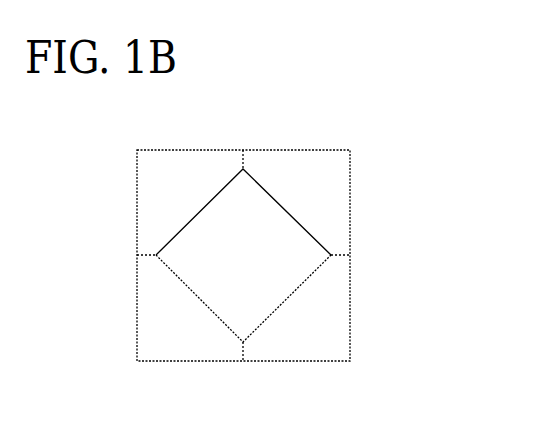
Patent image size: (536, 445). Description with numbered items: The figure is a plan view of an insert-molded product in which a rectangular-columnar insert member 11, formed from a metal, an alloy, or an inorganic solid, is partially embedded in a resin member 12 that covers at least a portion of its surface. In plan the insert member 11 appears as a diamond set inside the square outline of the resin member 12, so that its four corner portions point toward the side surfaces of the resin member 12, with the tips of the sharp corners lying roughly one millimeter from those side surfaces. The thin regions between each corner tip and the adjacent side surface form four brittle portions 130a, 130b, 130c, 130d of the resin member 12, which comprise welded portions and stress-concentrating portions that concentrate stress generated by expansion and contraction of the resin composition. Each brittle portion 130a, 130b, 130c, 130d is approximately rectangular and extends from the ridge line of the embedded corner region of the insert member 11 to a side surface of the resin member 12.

The insert member 11 is at (253, 182).
The resin member 12 is at (350, 207).
The brittle portion 130a is at (243, 163).
The brittle portion 130b is at (147, 256).
The brittle portion 130c is at (242, 350).
The brittle portion 130d is at (350, 264).